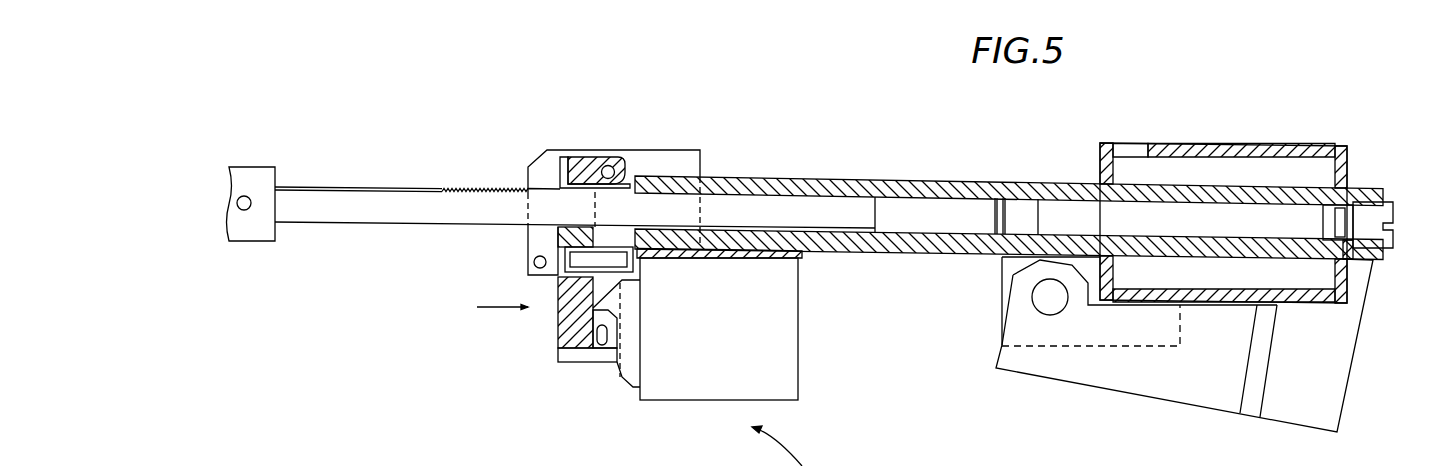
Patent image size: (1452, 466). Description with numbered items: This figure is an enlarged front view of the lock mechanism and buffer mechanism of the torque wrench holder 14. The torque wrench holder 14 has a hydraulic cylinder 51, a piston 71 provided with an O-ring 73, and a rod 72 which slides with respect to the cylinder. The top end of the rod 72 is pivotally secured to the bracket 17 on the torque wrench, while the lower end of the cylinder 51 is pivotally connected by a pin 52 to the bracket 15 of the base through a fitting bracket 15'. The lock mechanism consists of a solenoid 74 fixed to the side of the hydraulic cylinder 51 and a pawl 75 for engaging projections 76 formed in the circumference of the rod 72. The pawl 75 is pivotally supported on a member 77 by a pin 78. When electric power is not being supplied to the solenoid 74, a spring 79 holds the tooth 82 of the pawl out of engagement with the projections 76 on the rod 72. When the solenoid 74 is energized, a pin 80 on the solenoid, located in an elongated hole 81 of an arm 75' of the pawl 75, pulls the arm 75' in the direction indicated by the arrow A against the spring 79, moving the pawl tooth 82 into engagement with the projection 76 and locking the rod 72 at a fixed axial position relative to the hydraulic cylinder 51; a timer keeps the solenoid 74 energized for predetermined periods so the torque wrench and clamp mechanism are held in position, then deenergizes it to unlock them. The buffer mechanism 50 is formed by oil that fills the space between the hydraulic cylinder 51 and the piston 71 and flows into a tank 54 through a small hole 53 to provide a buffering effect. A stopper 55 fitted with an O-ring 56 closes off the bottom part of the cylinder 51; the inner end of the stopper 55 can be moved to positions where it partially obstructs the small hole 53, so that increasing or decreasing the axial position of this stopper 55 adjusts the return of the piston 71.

The torque wrench holder 14 is at (825, 166).
The bracket 15 is at (1184, 353).
The fitting bracket 15' is at (1091, 359).
The bracket 17 is at (236, 167).
The buffer mechanism 50 is at (1197, 93).
The hydraulic cylinder 51 is at (889, 178).
The pin 52 is at (1032, 297).
The small hole 53 is at (1318, 259).
The tank 54 is at (1317, 143).
The stopper 55 is at (1396, 216).
The O-ring 56 is at (1352, 259).
The piston 71 is at (965, 204).
The rod 72 is at (400, 222).
The O-ring 73 is at (1007, 196).
The solenoid 74 is at (252, 198).
The pawl 75 is at (596, 149).
The arm 75' is at (579, 307).
The projections 76 is at (516, 189).
The member 77 is at (678, 150).
The pin 78 is at (615, 169).
The spring 79 is at (641, 258).
The pin 80 is at (606, 331).
The elongated hole 81 is at (599, 346).
The tooth 82 is at (563, 157).
The arrow A is at (508, 308).